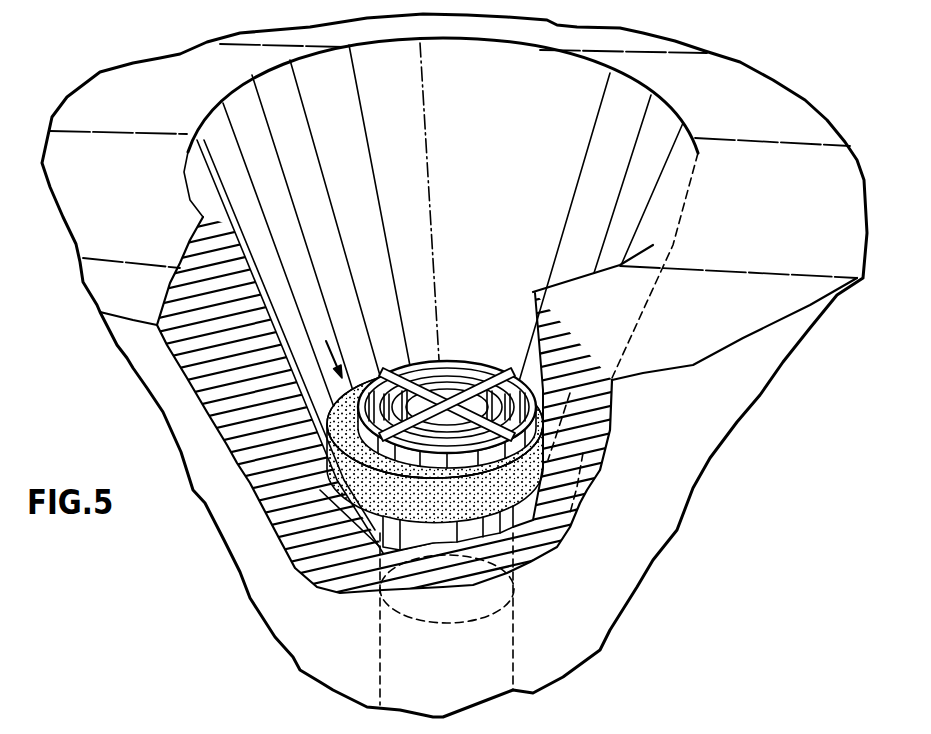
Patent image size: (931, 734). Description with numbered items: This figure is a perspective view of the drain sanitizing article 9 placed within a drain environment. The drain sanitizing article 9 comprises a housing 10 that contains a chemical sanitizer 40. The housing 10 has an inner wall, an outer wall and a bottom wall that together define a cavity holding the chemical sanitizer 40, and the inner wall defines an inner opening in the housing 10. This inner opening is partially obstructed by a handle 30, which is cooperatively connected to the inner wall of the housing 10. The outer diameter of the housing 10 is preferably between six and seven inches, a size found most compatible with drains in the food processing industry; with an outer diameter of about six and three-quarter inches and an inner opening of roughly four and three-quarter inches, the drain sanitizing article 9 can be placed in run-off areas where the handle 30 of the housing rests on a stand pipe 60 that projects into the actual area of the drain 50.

The housing 10 is at (545, 387).
The handle 30 is at (440, 358).
The chemical sanitizer 40 is at (345, 482).
The drain 50 is at (248, 117).
The stand pipe 60 is at (458, 368).
The drain sanitizing article 9 is at (329, 345).